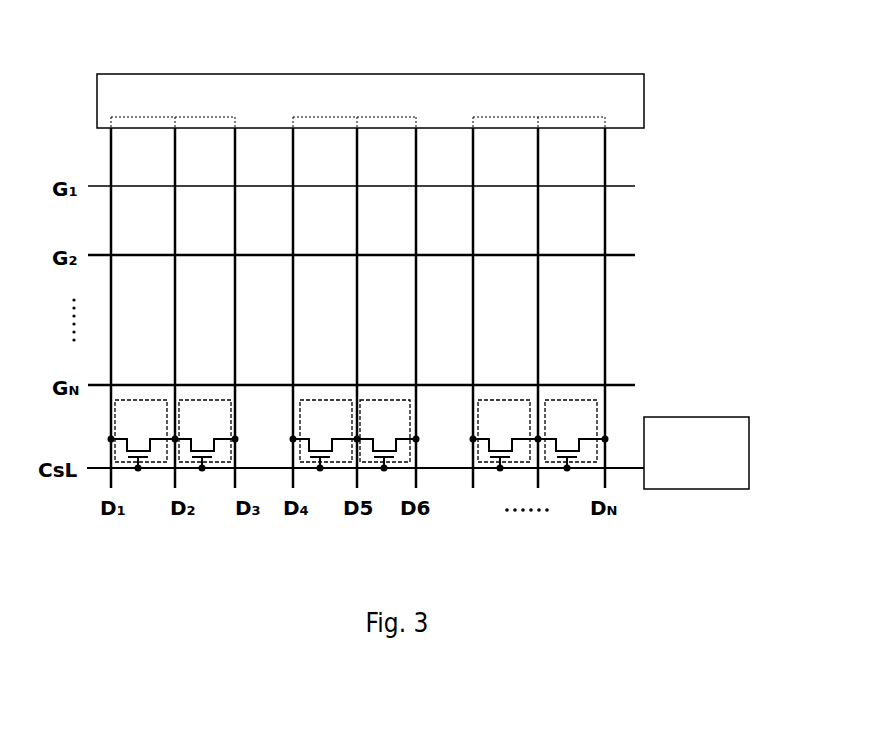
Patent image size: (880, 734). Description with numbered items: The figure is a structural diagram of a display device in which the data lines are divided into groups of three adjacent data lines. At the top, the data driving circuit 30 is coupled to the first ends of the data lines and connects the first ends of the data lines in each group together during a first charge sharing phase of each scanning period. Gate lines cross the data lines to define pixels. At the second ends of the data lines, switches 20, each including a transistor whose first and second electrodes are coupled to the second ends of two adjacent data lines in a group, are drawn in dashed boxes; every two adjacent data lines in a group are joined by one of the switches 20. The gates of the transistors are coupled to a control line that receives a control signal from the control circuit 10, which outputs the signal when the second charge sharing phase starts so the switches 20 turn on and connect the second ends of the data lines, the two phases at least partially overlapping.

The data driving circuit 30 is at (280, 73).
The switch 20 is at (116, 431).
The control circuit 10 is at (733, 462).